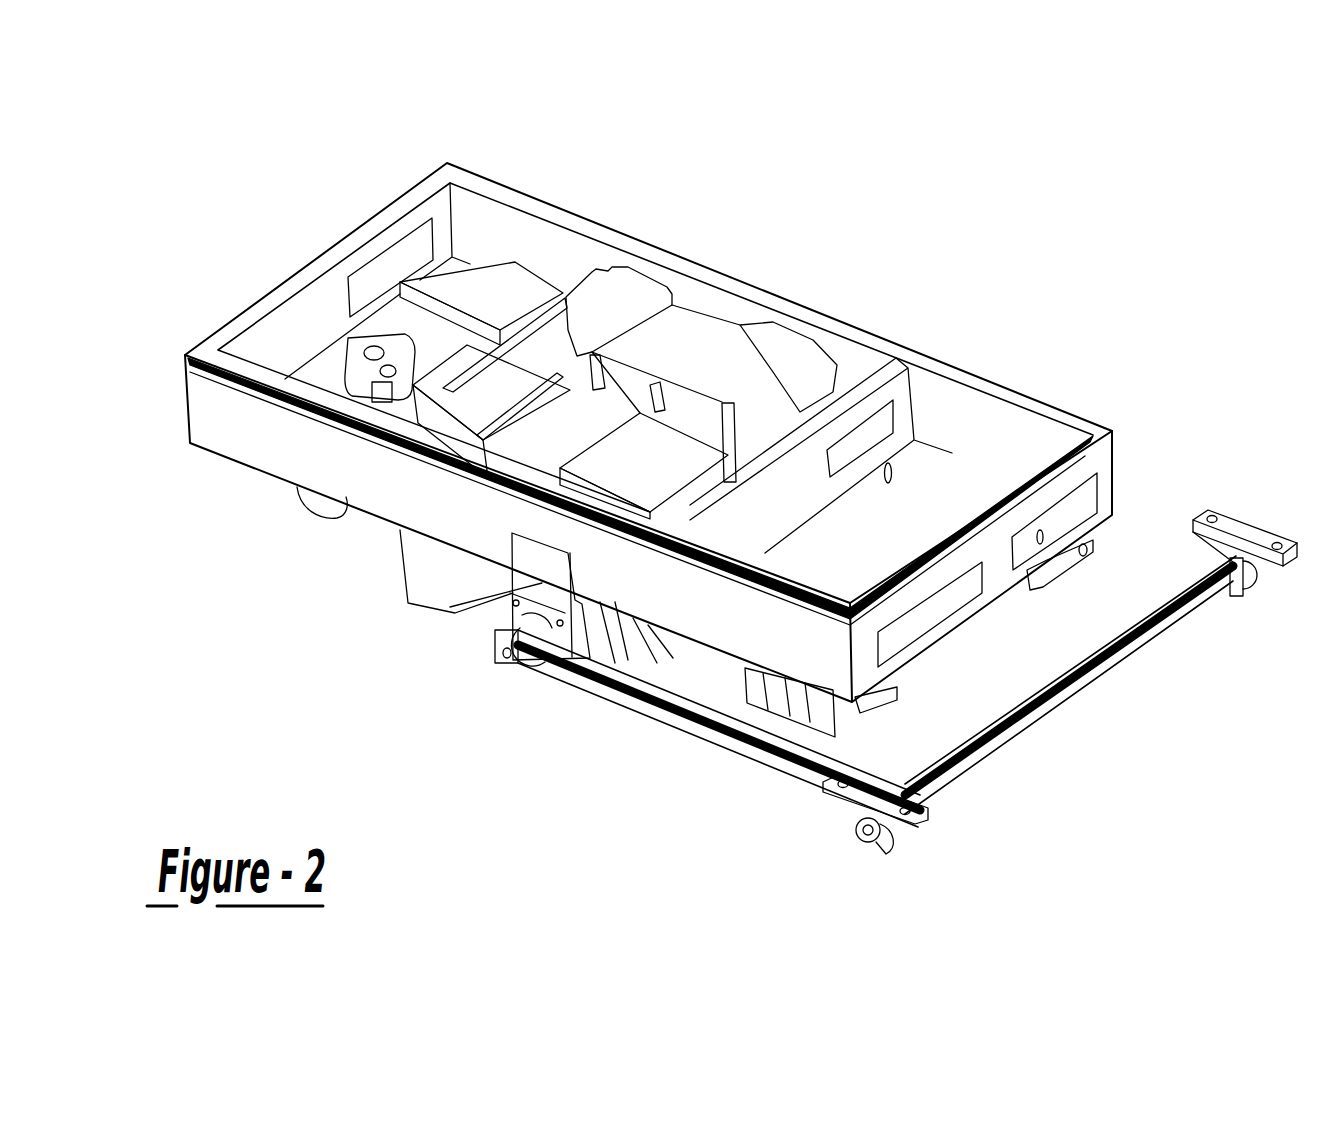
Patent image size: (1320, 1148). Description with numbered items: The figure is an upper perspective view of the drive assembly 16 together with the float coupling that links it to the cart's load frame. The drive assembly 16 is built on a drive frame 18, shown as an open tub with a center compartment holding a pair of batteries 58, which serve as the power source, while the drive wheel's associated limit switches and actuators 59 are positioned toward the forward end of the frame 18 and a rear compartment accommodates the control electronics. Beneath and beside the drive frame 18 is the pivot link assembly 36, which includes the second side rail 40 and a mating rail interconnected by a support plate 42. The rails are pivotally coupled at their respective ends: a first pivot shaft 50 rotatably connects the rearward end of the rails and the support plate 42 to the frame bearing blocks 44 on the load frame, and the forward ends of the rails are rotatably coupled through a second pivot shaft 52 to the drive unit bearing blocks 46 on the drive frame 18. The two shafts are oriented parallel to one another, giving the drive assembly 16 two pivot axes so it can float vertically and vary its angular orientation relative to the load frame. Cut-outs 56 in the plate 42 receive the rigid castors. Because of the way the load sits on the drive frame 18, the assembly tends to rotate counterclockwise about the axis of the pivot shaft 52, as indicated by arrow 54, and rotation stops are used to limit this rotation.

The drive assembly 16 is at (732, 248).
The drive frame 18 is at (263, 433).
The pivot link assembly 36 is at (1180, 500).
The second side rail 40 is at (660, 727).
The support plate 42 is at (965, 695).
The frame bearing blocks 44 is at (857, 812).
The drive unit bearing blocks 46 is at (540, 583).
The first pivot shaft 50 is at (862, 842).
The pivot shaft 52 is at (507, 670).
The arrow 54 is at (263, 713).
The cut-outs 56 is at (1083, 553).
The batteries 58 is at (693, 342).
The limit switches and actuators 59 is at (437, 337).